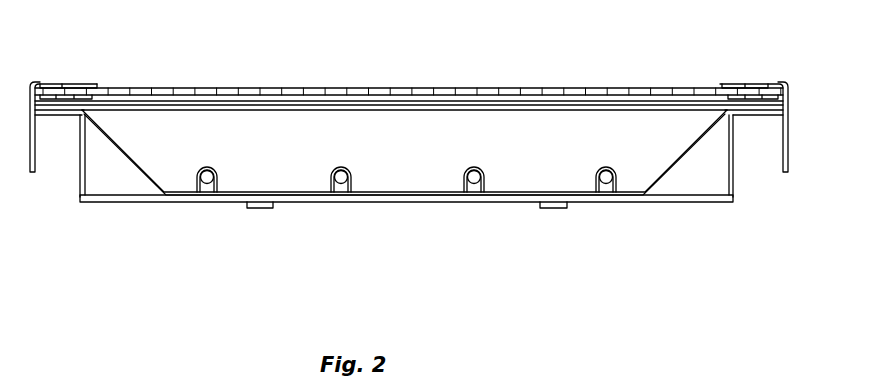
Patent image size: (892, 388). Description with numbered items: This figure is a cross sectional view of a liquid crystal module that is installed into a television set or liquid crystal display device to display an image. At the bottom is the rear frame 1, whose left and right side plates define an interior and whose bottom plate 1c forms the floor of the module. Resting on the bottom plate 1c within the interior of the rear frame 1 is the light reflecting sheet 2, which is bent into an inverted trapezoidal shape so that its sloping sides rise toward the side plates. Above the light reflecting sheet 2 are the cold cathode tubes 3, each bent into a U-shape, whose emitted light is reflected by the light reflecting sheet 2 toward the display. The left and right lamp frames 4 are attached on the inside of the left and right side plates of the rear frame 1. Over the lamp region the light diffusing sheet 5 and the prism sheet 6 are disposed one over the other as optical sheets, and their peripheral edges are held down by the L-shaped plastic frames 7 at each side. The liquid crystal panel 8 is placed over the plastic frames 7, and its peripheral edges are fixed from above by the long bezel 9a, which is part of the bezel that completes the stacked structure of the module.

The rear frame 1 is at (124, 212).
The bottom plate 1c is at (698, 195).
The light reflecting sheet 2 is at (668, 173).
The cold cathode tube 3 is at (341, 180).
The lamp frame 4 is at (355, 133).
The light diffusing sheet 5 is at (573, 105).
The prism sheet 6 is at (465, 101).
The plastic frame 7 is at (60, 95).
The liquid crystal panel 8 is at (272, 87).
The long bezel 9a is at (85, 83).